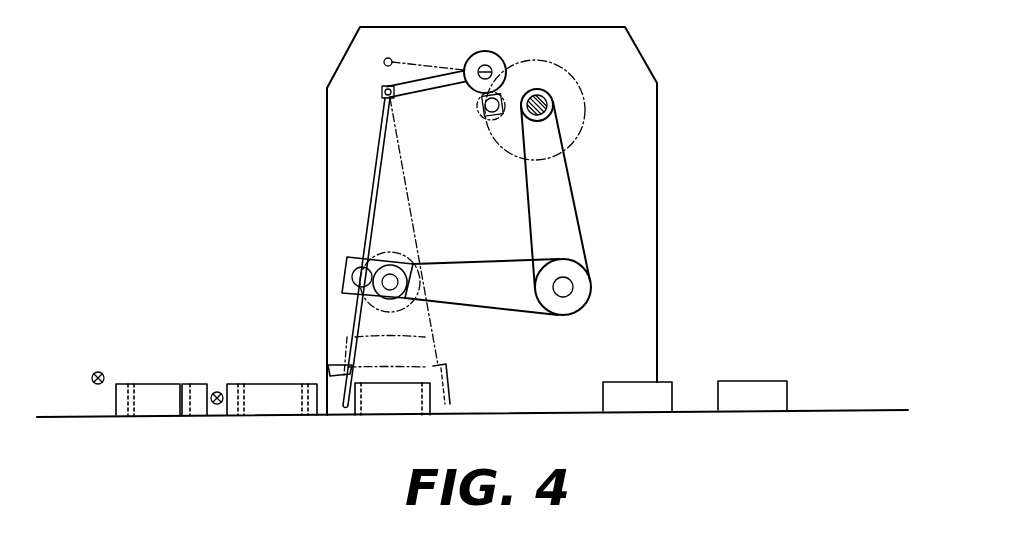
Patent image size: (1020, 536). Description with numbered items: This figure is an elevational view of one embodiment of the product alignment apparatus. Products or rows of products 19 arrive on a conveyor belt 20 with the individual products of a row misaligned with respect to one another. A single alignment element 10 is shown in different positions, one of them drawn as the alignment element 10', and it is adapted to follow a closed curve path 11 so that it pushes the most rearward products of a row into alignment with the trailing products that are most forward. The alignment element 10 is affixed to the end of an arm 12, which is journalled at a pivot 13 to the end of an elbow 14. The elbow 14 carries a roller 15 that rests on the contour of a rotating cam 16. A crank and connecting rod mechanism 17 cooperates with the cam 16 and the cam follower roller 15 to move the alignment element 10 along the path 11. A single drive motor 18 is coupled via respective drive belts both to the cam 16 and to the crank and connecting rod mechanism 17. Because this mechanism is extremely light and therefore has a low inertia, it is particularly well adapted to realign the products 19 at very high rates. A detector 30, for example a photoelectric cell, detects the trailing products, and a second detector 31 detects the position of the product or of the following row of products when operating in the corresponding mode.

The alignment element 10 is at (311, 359).
The alignment element 10' is at (480, 377).
The closed curve path 11 is at (437, 350).
The arm 12 is at (378, 184).
The journal 13 is at (381, 93).
The elbow 14 is at (436, 88).
The roller 15 is at (468, 60).
The rotating cam 16 is at (577, 100).
The crank and connecting rod mechanism 17 is at (396, 249).
The drive motor 18 is at (580, 307).
The products 19 is at (744, 388).
The conveyor belt 20 is at (844, 408).
The detector 30 is at (218, 391).
The second detector 31 is at (96, 371).